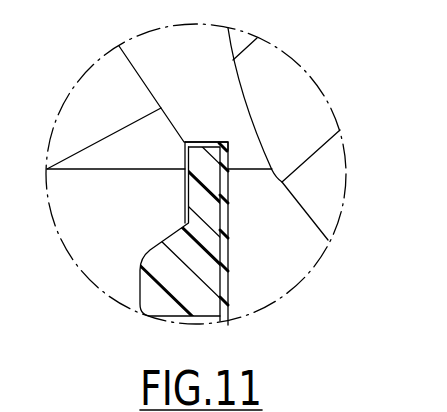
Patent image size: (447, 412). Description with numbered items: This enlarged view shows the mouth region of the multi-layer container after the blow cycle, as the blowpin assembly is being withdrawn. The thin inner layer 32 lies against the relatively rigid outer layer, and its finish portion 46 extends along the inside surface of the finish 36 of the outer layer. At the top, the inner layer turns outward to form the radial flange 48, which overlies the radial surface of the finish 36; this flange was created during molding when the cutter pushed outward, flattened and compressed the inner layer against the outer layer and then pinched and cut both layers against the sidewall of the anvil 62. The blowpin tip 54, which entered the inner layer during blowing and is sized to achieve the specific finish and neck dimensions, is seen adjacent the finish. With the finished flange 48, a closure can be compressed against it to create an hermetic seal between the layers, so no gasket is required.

The inner layer 32 is at (190, 215).
The finish 36 is at (175, 287).
The finish portion 46 is at (225, 230).
The radial flange 48 is at (205, 143).
The blowpin tip 54 is at (332, 192).
The anvil 62 is at (132, 153).